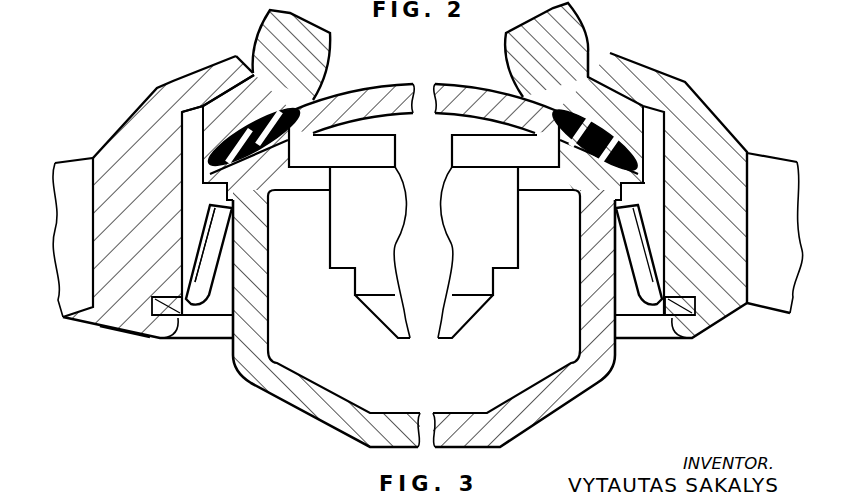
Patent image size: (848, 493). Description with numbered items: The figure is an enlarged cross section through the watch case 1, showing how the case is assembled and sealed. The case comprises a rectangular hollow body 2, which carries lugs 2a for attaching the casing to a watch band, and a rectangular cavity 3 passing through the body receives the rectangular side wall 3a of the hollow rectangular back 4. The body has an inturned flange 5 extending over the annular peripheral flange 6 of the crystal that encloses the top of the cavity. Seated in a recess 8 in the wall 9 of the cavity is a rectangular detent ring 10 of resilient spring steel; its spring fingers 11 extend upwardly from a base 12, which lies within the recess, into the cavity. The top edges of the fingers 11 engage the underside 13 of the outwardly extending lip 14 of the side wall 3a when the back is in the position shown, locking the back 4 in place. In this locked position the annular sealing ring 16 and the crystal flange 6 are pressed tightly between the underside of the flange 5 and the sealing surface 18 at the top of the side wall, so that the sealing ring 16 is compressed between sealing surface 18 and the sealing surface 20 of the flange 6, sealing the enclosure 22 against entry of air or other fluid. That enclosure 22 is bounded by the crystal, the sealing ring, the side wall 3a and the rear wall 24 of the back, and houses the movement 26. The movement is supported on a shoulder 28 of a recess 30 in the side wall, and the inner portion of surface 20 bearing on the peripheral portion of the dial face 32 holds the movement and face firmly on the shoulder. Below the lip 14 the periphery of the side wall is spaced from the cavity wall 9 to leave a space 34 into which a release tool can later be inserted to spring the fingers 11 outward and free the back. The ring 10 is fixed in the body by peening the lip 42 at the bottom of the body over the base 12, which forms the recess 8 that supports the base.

The watch case 1 is at (253, 22).
The hollow body 2 is at (143, 98).
The lugs 2a is at (62, 187).
The cavity 3 is at (110, 318).
The side wall 3a is at (258, 292).
The back 4 is at (297, 412).
The inturned flange 5 is at (213, 83).
The peripheral flange 6 is at (226, 110).
The recess 8 is at (128, 331).
The cavity wall 9 is at (182, 213).
The detent ring 10 is at (219, 297).
The spring fingers 11 is at (214, 236).
The base 12 is at (157, 318).
The underside 13 is at (180, 207).
The lip 14 is at (180, 202).
The sealing ring 16 is at (229, 106).
The sealing surface 18 is at (182, 181).
The sealing surface 20 is at (251, 132).
The enclosure 22 is at (516, 358).
The rear wall 24 is at (467, 440).
The movement 26 is at (505, 243).
The shoulder 28 is at (326, 169).
The recess 30 is at (311, 138).
The dial face 32 is at (320, 110).
The space 34 is at (222, 268).
The lip 42 is at (178, 316).